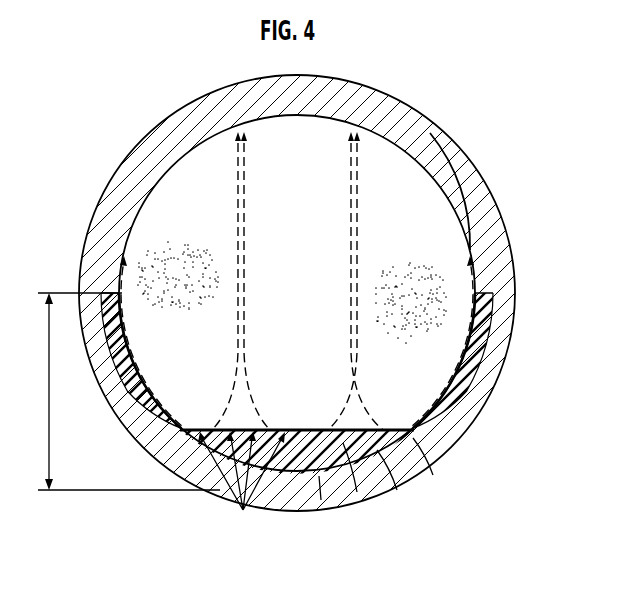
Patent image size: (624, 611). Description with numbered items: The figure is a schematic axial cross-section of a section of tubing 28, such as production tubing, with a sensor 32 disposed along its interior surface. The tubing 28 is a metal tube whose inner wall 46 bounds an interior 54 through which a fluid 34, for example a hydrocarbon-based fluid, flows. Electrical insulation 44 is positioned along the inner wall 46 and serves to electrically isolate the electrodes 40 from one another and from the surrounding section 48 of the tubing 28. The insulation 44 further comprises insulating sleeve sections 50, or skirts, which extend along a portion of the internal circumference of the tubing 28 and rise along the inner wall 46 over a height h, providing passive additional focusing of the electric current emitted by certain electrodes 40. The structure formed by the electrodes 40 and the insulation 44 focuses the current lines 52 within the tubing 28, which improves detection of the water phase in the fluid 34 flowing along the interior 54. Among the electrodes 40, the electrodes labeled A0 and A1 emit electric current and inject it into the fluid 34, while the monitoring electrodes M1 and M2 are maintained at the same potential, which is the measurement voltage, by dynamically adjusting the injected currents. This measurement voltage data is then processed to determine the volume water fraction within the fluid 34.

The tubing 28 is at (120, 172).
The interior 54 is at (410, 180).
The inner wall 46 is at (447, 216).
The fluid 34 is at (189, 290).
The current lines 52 is at (349, 196).
The insulating sleeve sections 50 is at (133, 430).
The surrounding section 48 is at (483, 348).
The electrical insulation 44 is at (307, 481).
The sensor 32 is at (294, 424).
The electrodes 40 is at (243, 510).
The emitting electrode A0 is at (321, 500).
The monitoring electrode M1 is at (357, 492).
The monitoring electrode M2 is at (397, 490).
The emitting electrode A1 is at (433, 475).
The height h is at (129, 391).